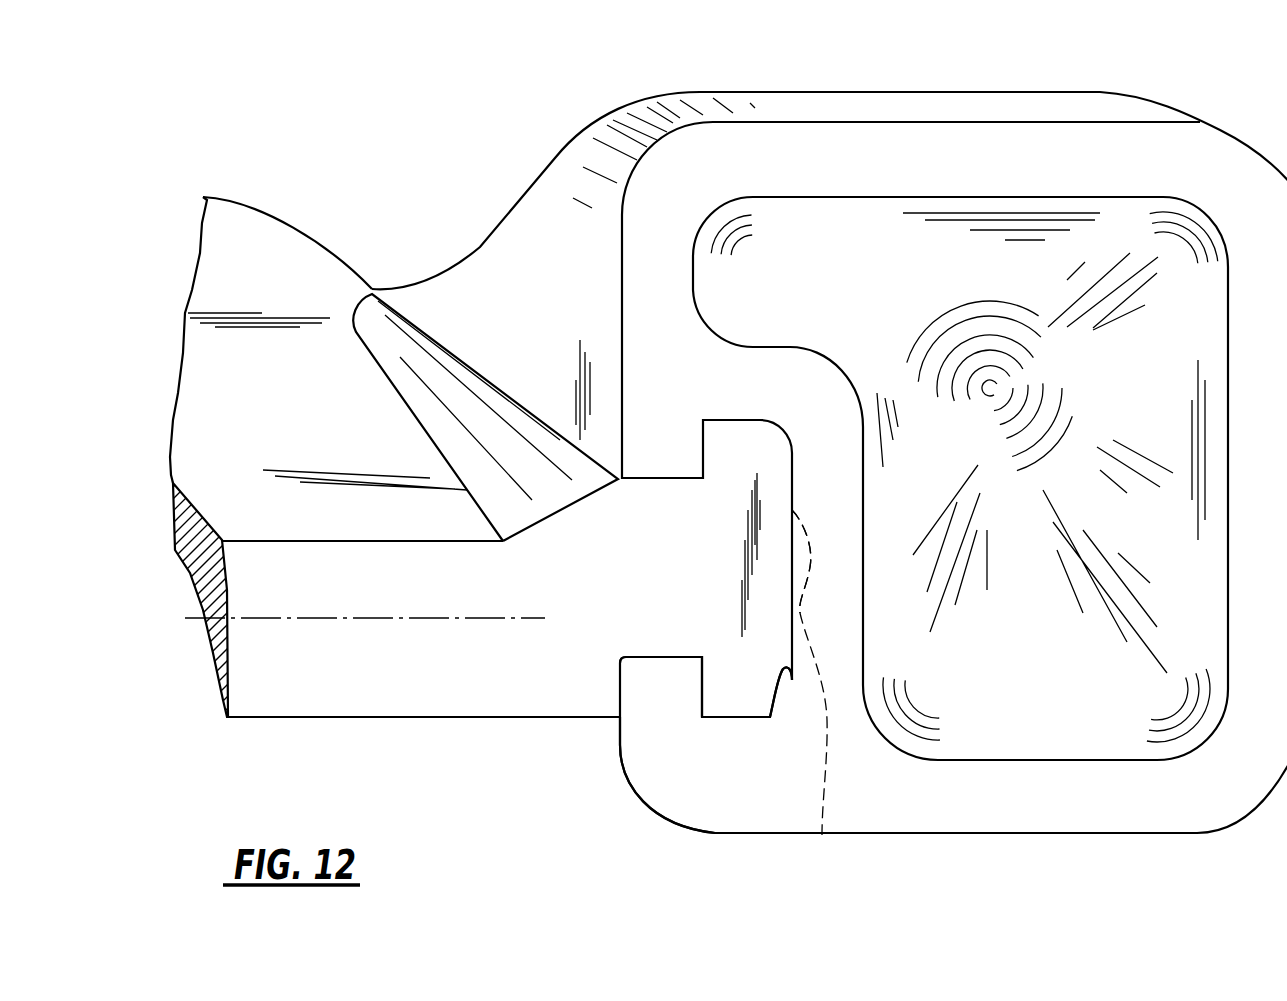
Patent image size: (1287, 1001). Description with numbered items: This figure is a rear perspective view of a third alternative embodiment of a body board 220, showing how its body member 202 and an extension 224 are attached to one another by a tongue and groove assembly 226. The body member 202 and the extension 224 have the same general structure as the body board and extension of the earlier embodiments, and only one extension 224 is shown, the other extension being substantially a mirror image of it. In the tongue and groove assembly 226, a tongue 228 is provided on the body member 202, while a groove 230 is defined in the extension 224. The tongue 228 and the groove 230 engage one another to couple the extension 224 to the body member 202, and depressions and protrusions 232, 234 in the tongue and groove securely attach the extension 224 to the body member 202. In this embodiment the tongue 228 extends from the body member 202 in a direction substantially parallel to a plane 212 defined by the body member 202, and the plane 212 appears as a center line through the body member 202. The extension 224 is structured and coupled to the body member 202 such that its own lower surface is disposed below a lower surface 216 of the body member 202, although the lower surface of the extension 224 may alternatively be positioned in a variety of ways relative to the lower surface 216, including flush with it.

The body member 202 is at (250, 227).
The plane 212 is at (197, 618).
The lower surface 216 is at (303, 717).
The body board 220 is at (368, 150).
The extension 224 is at (897, 133).
The tongue and groove assembly 226 is at (584, 804).
The tongue 228 is at (710, 683).
The groove 230 is at (781, 670).
The depressions and protrusions 232 is at (822, 835).
The depressions and protrusions 234 is at (826, 846).